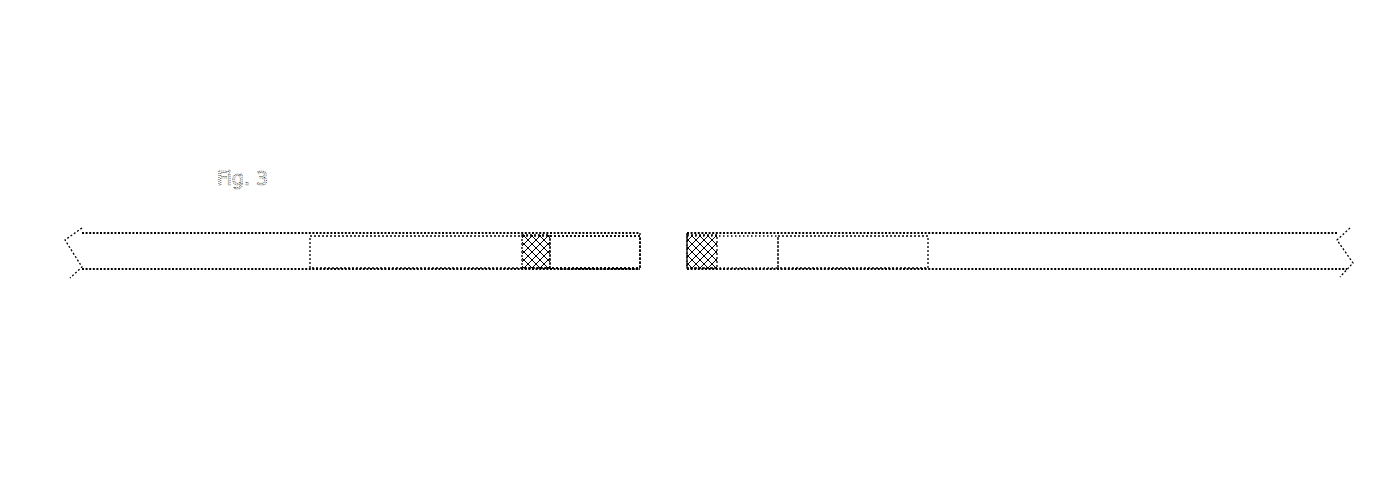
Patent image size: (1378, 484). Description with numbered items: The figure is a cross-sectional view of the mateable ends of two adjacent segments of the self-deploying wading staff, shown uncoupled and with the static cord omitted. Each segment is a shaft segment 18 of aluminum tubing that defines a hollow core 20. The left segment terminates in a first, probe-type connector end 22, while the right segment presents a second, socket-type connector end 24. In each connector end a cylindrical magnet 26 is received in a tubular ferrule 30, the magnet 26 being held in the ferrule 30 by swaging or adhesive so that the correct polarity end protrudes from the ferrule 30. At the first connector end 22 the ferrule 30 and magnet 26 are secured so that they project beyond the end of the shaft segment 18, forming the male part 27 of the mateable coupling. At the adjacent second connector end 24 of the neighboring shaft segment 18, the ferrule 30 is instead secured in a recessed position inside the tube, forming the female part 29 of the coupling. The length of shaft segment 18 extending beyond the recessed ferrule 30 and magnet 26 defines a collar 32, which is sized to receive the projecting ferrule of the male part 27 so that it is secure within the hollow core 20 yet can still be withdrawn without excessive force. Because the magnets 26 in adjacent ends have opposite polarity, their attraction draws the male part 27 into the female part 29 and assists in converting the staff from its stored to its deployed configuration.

The shaft segment 18 is at (232, 255).
The hollow core 20 is at (709, 313).
The first connector end 22 is at (811, 226).
The second connector end 24 is at (626, 244).
The magnet 26 is at (533, 255).
The male part of the mateable coupling 27 is at (739, 226).
The female part of the mateable coupling 29 is at (596, 226).
The tubular ferrule 30 is at (362, 255).
The collar 32 is at (594, 286).